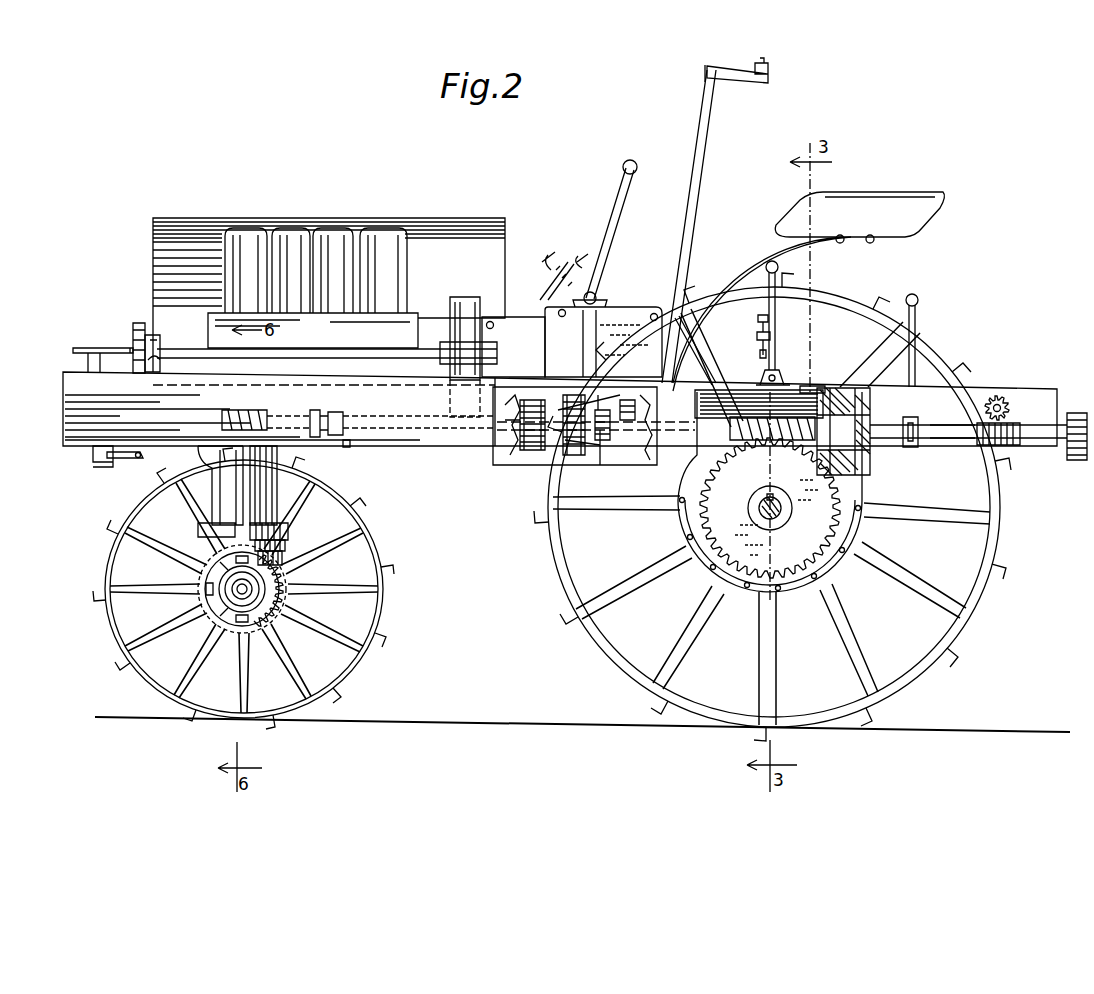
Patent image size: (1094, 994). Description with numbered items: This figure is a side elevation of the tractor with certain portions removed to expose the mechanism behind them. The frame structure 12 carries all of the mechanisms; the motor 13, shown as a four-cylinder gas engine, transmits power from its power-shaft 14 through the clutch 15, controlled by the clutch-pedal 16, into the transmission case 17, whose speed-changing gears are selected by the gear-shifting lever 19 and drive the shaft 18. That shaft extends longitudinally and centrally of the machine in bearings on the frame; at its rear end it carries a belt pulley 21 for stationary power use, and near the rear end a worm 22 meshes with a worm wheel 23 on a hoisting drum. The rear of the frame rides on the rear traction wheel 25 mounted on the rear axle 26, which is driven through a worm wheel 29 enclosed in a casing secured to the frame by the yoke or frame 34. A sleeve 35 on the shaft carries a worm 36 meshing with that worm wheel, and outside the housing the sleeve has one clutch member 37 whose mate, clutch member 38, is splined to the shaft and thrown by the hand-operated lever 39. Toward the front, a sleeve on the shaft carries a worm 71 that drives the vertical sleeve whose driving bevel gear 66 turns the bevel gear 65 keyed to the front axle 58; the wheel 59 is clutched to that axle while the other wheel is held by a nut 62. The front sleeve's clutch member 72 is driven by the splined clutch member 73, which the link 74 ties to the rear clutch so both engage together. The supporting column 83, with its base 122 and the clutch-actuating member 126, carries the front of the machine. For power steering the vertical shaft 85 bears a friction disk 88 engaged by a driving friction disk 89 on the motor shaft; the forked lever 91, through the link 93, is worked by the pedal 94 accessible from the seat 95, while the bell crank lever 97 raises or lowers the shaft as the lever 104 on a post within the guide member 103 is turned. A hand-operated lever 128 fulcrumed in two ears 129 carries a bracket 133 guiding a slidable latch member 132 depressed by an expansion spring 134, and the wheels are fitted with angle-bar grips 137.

The frame structure 12 is at (63, 381).
The motor 13 is at (337, 232).
The power-shaft 14 is at (440, 348).
The clutch 15 is at (466, 297).
The clutch-pedal 16 is at (560, 256).
The transmission case 17 is at (623, 322).
The shaft 18 is at (612, 465).
The gear-shifting lever 19 is at (620, 190).
The belt pulley 21 is at (1076, 461).
The worm 22 is at (1015, 445).
The worm wheel 23 is at (1037, 388).
The rear traction wheel 25 is at (1002, 548).
The rear axle 26 is at (757, 504).
The worm wheel 29 is at (786, 592).
The yoke or frame 34 is at (864, 527).
The sleeve 35 is at (812, 386).
The worm 36 is at (745, 390).
The clutch member 37 is at (885, 389).
The clutch member 38 is at (910, 447).
The hand-operated lever 39 is at (920, 305).
The axle 58 is at (260, 588).
The wheel 59 is at (350, 675).
The nut 62 is at (200, 622).
The bevel gear 65 is at (283, 600).
The driving bevel gear 66 is at (282, 563).
The worm 71 is at (222, 420).
The clutch member 72 is at (300, 448).
The clutch member 73 is at (348, 447).
The link 74 is at (333, 414).
The supporting column 83 is at (278, 492).
The vertical shaft 85 is at (93, 450).
The friction disk 88 is at (84, 348).
The driving friction disk 89 is at (138, 323).
The forked lever 91 is at (155, 335).
The link 93 is at (188, 386).
The pedal 94 is at (540, 333).
The seat 95 is at (872, 192).
The bell crank lever 97 is at (120, 462).
The guide member 103 is at (700, 195).
The lever 104 is at (738, 82).
The base 122 is at (288, 524).
The clutch-actuating member 126 is at (285, 546).
The hand-operated lever 128 is at (786, 274).
The ears 129 is at (778, 370).
The latch member 132 is at (760, 350).
The bracket 133 is at (757, 314).
The expansion spring 134 is at (757, 334).
The grips 137 is at (838, 290).